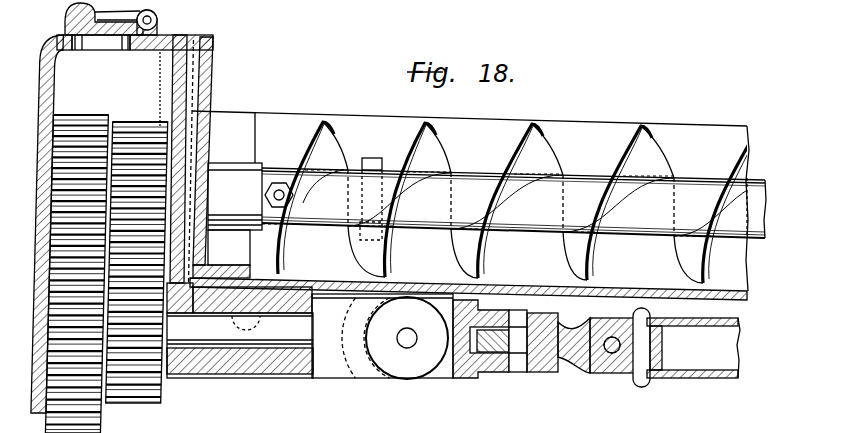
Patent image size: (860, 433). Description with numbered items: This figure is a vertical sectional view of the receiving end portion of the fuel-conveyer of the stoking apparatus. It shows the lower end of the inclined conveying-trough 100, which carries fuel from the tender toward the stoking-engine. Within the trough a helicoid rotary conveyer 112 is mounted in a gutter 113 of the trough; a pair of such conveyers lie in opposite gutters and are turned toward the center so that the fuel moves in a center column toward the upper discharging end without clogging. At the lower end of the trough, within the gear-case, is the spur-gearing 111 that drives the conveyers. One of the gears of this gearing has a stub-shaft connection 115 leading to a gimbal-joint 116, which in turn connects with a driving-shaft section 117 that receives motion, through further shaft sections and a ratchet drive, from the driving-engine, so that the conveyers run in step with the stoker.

The conveying-trough 100 is at (470, 191).
The spur-gearing 111 is at (88, 123).
The helicoid rotary conveyer 112 is at (630, 148).
The gutter 113 is at (744, 297).
The stub-shaft connection 115 is at (257, 350).
The gimbal-joint 116 is at (580, 350).
The driving-shaft section 117 is at (710, 375).